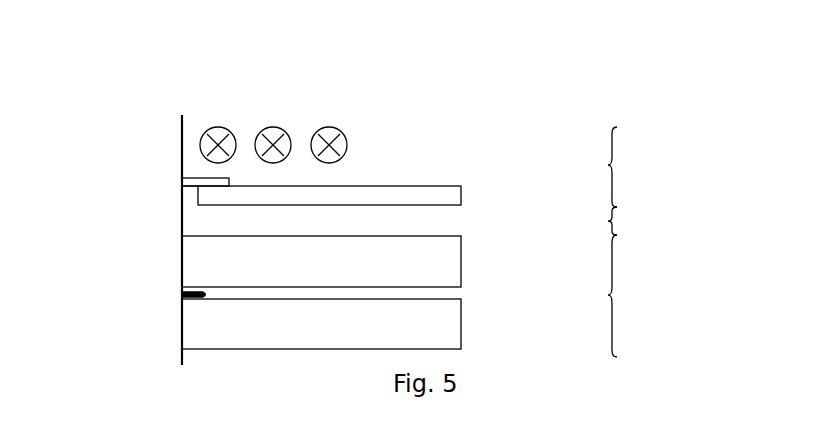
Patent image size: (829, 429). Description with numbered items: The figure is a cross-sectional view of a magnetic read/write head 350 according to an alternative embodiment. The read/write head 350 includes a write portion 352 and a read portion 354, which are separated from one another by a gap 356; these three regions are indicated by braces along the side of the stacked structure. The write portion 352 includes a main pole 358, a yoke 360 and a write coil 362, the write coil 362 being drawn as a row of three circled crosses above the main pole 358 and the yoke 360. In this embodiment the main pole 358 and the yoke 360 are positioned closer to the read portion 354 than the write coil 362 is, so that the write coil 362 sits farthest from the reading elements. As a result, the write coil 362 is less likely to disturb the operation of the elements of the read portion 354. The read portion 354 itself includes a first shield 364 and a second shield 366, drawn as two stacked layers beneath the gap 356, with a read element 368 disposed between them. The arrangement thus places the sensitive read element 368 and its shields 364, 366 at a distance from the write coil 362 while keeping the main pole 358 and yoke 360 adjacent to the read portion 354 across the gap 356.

The read/write head 350 is at (614, 82).
The write portion 352 is at (642, 167).
The read portion 354 is at (642, 296).
The gap 356 is at (642, 221).
The main pole 358 is at (181, 183).
The yoke 360 is at (461, 194).
The write coil 362 is at (200, 147).
The first shield 364 is at (200, 333).
The second shield 366 is at (197, 261).
The read element 368 is at (197, 297).